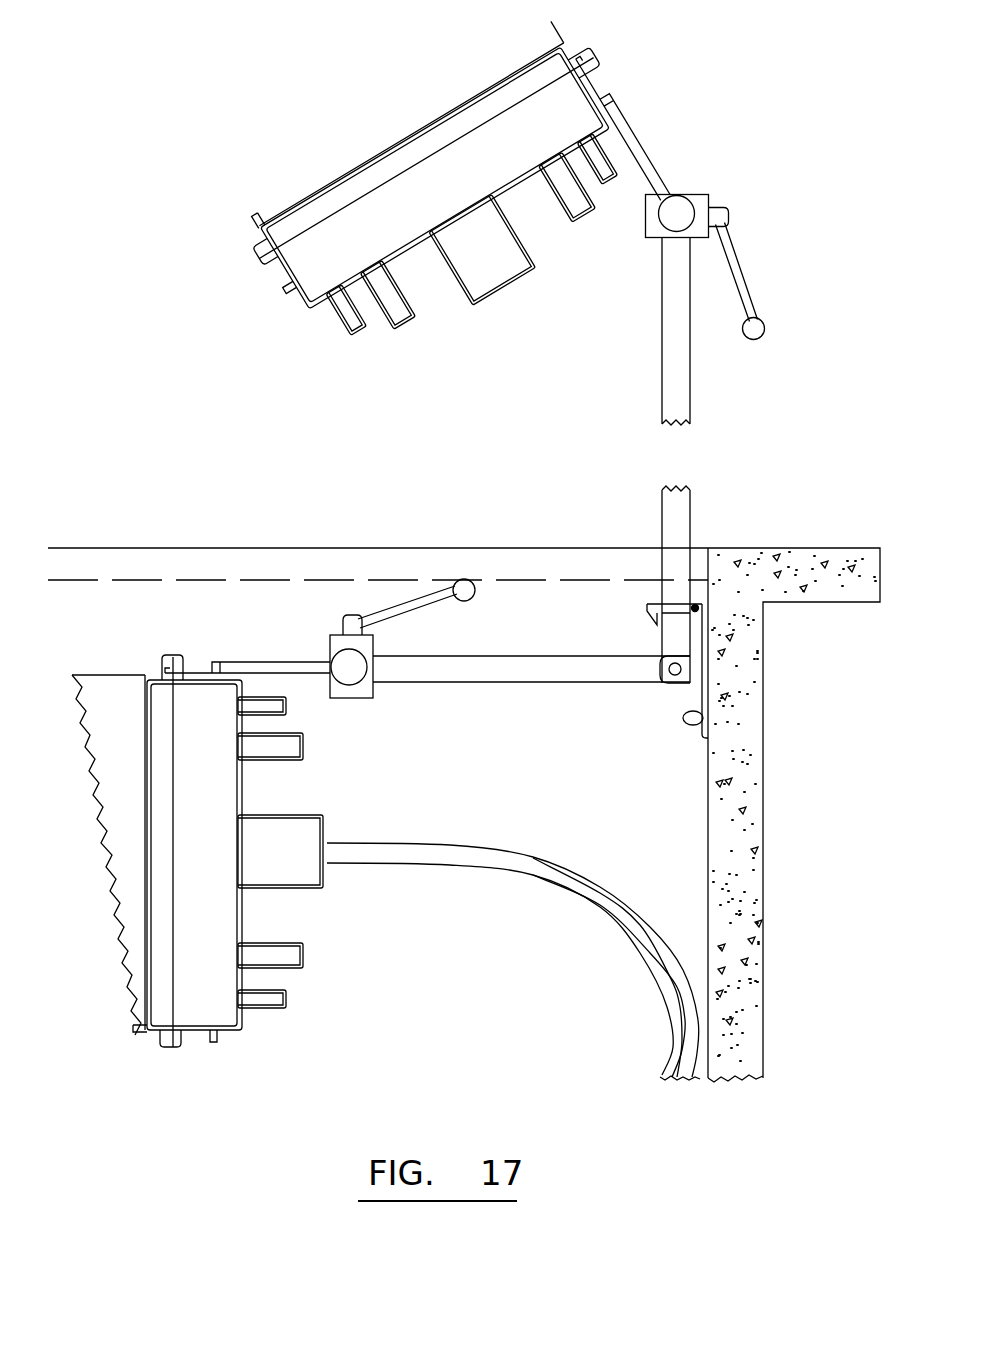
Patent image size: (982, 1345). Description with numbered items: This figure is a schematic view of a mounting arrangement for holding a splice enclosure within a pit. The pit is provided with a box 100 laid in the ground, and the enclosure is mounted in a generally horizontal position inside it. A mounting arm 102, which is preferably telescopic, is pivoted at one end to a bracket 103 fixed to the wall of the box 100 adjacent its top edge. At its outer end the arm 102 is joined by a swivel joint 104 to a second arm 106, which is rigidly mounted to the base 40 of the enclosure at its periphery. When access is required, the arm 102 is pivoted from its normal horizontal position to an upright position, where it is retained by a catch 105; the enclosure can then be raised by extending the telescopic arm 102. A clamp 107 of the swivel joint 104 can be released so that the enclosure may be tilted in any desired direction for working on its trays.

The base 40 is at (252, 800).
The box 100 is at (738, 773).
The mounting arm 102 is at (568, 667).
The bracket 103 is at (702, 720).
The swivel joint 104 is at (380, 703).
The catch 105 is at (647, 604).
The second arm 106 is at (263, 662).
The clamp 107 is at (412, 598).